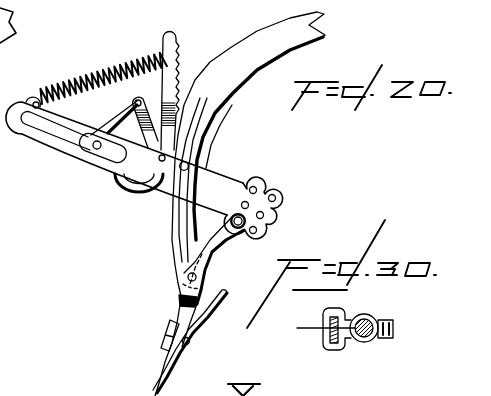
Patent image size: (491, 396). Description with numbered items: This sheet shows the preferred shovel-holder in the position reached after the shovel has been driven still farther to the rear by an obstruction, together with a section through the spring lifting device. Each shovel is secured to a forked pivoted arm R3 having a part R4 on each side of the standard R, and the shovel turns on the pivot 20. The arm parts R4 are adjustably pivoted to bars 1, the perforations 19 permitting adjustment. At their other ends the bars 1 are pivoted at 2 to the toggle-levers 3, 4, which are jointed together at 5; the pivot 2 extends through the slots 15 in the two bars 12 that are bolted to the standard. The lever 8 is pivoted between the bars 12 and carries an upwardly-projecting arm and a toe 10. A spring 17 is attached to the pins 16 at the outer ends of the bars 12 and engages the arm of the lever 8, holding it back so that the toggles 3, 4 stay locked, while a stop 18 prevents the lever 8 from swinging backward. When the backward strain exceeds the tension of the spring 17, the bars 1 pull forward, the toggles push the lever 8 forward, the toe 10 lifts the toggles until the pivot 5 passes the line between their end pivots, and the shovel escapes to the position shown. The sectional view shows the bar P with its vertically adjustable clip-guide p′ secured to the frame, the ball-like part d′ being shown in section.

In FIG. 20, the bars 1 is at (124, 144).
In FIG. 20, the pivot 2 is at (101, 146).
In FIG. 20, the toggle-lever 3 is at (111, 118).
In FIG. 20, the toggle-lever 4 is at (140, 122).
In FIG. 20, the pivot 5 is at (136, 100).
In FIG. 20, the lever 8 is at (131, 105).
In FIG. 20, the toe 10 is at (139, 193).
In FIG. 20, the bars 12 is at (79, 145).
In FIG. 20, the slots 15 is at (43, 125).
In FIG. 20, the pins 16 is at (35, 100).
In FIG. 20, the spring 17 is at (109, 72).
In FIG. 20, the stop 18 is at (172, 51).
In FIG. 20, the perforations 19 is at (310, 228).
In FIG. 20, the pivot 20 is at (187, 278).
In FIG. 20, the standard R is at (248, 154).
In FIG. 20, the pivoted arm R3 is at (190, 343).
In FIG. 20, the arm part R4 is at (212, 259).
In FIG. 30, the bar P is at (318, 329).
In FIG. 30, the ball d′ is at (370, 321).
In FIG. 30, the clip-guide p′ is at (355, 341).